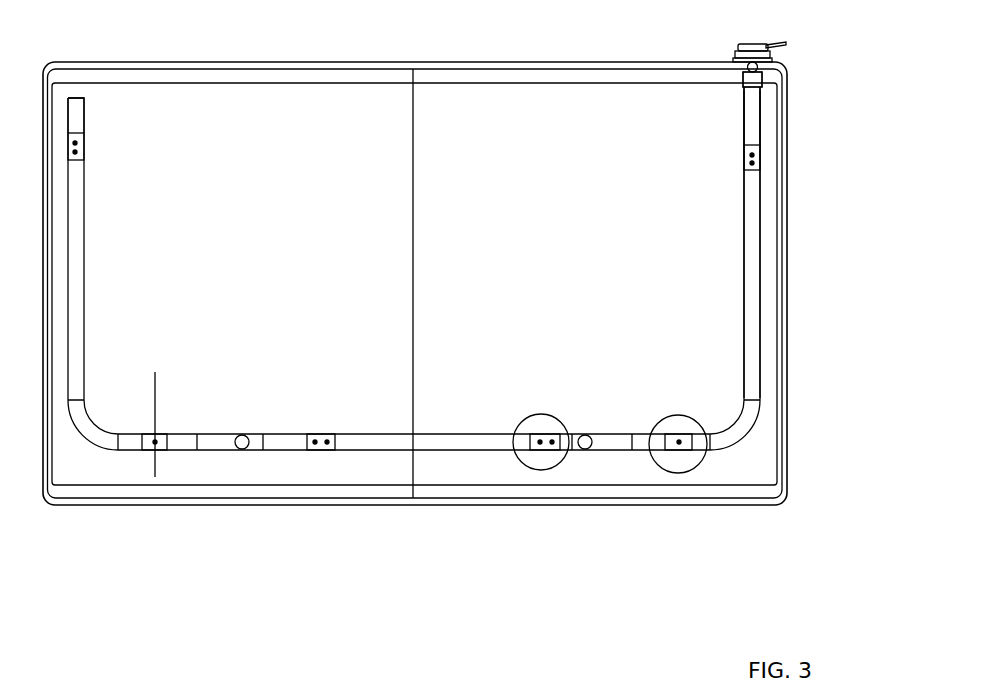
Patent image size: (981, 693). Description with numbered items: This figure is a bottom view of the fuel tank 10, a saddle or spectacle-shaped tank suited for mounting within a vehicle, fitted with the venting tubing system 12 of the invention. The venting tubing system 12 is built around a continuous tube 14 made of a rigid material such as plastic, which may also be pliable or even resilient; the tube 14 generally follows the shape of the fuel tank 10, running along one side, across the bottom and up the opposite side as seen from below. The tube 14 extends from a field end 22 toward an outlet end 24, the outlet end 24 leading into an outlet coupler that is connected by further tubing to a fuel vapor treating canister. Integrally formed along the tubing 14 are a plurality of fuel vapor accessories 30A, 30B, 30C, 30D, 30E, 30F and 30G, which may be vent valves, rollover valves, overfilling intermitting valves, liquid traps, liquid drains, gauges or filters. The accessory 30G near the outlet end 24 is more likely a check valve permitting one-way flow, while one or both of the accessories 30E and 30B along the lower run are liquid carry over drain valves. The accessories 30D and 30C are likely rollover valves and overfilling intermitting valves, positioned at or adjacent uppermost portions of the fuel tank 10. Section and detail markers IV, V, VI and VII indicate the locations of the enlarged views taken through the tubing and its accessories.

The fuel tank 10 is at (792, 357).
The venting tubing system 12 is at (766, 277).
The continuous tube 14 is at (748, 323).
The field end 22 is at (80, 97).
The outlet end 24 is at (770, 52).
The fuel vapor accessory 30A is at (76, 143).
The fuel vapor accessory 30B is at (155, 444).
The fuel vapor accessory 30C is at (327, 444).
The fuel vapor accessory 30D is at (552, 444).
The fuel vapor accessory 30E is at (679, 446).
The fuel vapor accessory 30F is at (753, 155).
The fuel vapor accessory 30G is at (743, 80).
The section line IV is at (146, 386).
The detail circle V is at (683, 486).
The detail circle VI is at (520, 474).
The detail VII is at (768, 91).